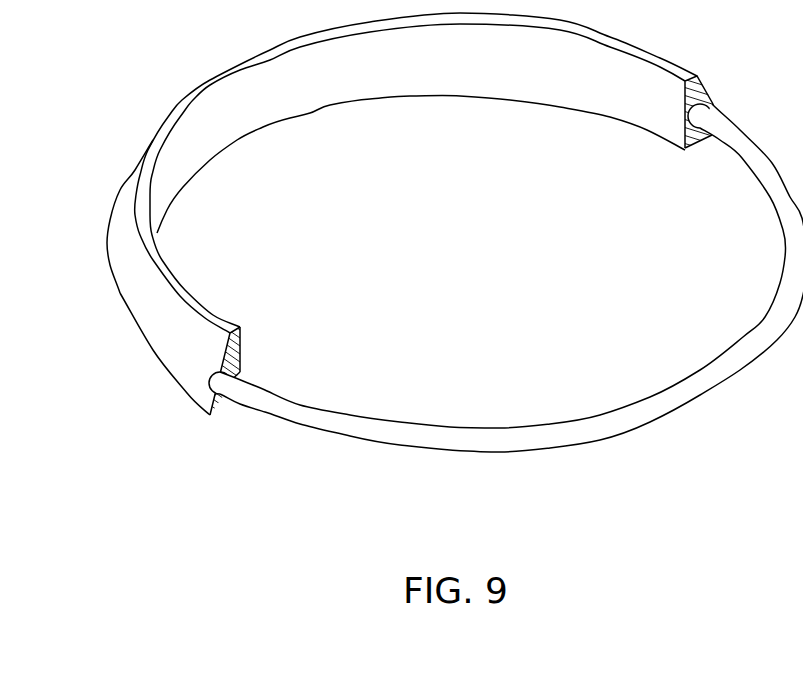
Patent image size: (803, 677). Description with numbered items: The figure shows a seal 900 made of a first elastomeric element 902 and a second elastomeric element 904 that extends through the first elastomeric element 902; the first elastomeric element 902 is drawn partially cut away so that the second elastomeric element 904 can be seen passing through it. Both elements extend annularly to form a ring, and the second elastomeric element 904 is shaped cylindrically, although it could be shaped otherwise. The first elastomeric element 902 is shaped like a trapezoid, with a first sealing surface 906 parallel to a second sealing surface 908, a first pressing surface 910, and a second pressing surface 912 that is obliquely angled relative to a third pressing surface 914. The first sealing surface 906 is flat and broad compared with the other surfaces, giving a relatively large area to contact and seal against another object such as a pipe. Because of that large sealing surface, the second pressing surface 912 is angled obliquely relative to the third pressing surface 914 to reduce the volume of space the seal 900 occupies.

The seal 900 is at (155, 44).
The first elastomeric element 902 is at (118, 300).
The second elastomeric element 904 is at (363, 442).
The first sealing surface 906 is at (293, 90).
The second sealing surface 908 is at (146, 355).
The first pressing surface 910 is at (167, 125).
The second pressing surface 912 is at (118, 220).
The third pressing surface 914 is at (168, 395).